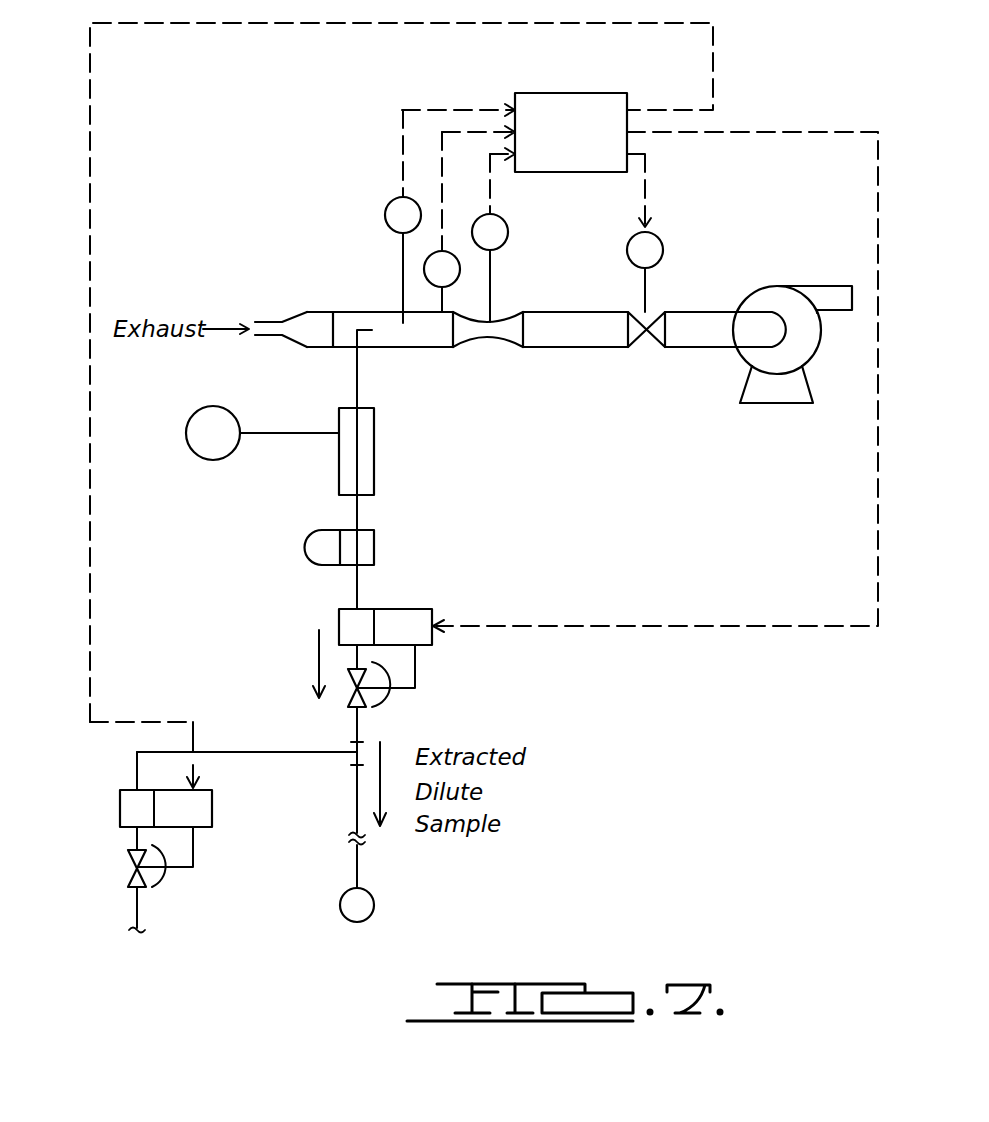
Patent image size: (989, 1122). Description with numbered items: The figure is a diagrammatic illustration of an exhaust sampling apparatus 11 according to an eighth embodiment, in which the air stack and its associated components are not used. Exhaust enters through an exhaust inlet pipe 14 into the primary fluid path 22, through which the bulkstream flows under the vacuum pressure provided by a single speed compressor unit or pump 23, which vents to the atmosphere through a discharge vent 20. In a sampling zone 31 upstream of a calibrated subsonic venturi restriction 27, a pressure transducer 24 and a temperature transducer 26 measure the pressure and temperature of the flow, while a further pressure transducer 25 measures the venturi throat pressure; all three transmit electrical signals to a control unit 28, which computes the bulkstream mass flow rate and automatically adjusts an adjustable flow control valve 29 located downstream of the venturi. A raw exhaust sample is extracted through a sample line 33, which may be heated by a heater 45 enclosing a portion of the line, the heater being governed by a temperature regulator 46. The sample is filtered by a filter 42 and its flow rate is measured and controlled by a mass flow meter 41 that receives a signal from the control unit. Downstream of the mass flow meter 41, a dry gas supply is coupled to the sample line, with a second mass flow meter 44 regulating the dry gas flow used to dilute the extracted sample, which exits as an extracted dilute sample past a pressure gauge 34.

The apparatus 11 is at (745, 220).
The exhaust inlet pipe 14 is at (268, 322).
The discharge vent 20 is at (850, 292).
The primary fluid path 22 is at (340, 312).
The pump 23 is at (755, 396).
The pressure transducer 24 is at (450, 273).
The pressure transducer 25 is at (492, 232).
The temperature transducer 26 is at (393, 208).
The subsonic venturi restriction 27 is at (488, 350).
The control unit 28 is at (527, 100).
The flow control valve 29 is at (645, 350).
The sampling zone 31 is at (430, 348).
The sample line 33 is at (356, 373).
The pressure gauge 34 is at (374, 901).
The mass flow meter 41 is at (432, 648).
The filter 42 is at (303, 557).
The mass flow meter 44 is at (120, 805).
The heater 45 is at (339, 473).
The temperature regulator 46 is at (200, 455).